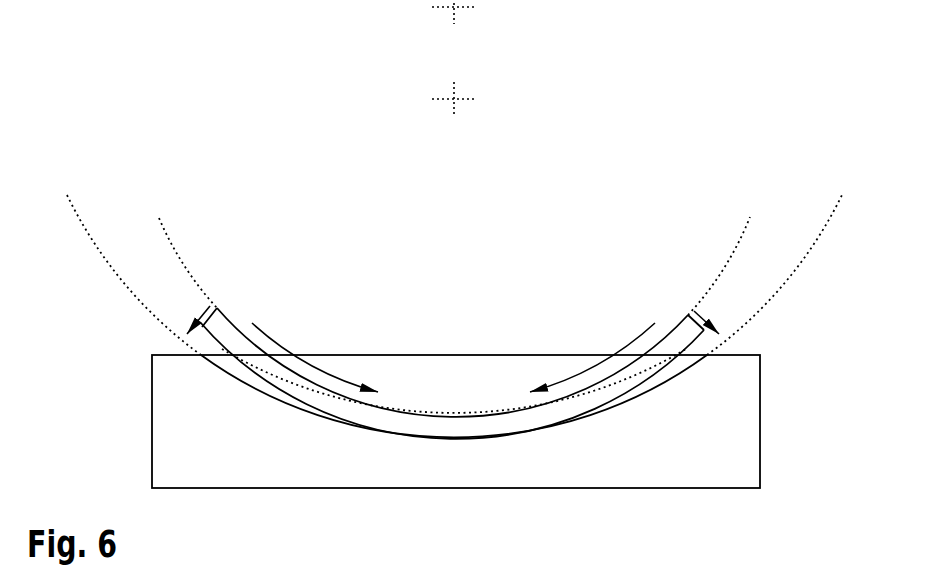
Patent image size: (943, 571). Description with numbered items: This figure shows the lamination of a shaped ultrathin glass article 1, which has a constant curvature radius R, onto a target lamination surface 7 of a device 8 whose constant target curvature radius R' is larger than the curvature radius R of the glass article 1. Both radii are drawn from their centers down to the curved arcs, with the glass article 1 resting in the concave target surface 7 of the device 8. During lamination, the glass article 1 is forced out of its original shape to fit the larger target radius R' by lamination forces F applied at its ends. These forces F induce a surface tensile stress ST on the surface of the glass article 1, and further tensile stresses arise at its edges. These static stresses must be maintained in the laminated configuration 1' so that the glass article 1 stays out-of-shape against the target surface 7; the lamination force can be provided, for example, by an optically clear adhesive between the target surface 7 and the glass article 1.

The glass article 1 is at (397, 328).
The laminated configuration 1' is at (365, 381).
The target lamination surface 7 is at (262, 395).
The device 8 is at (715, 452).
The curvature radius R is at (323, 161).
The target curvature radius R' is at (454, 177).
The lamination forces F is at (451, 315).
The surface tensile stress ST is at (453, 357).